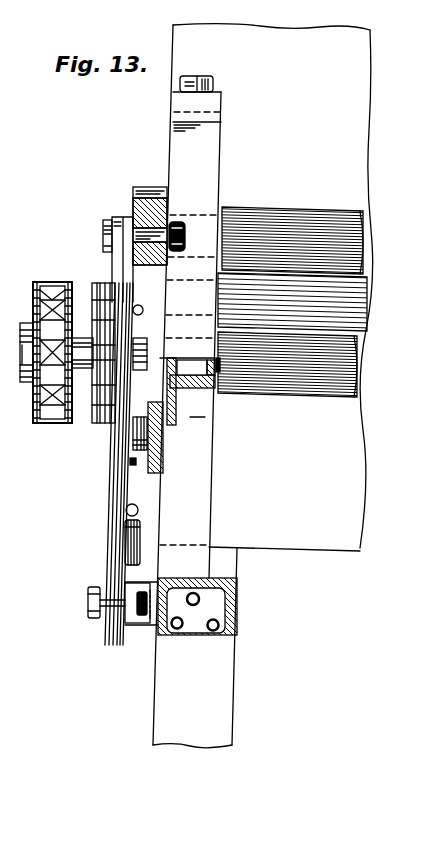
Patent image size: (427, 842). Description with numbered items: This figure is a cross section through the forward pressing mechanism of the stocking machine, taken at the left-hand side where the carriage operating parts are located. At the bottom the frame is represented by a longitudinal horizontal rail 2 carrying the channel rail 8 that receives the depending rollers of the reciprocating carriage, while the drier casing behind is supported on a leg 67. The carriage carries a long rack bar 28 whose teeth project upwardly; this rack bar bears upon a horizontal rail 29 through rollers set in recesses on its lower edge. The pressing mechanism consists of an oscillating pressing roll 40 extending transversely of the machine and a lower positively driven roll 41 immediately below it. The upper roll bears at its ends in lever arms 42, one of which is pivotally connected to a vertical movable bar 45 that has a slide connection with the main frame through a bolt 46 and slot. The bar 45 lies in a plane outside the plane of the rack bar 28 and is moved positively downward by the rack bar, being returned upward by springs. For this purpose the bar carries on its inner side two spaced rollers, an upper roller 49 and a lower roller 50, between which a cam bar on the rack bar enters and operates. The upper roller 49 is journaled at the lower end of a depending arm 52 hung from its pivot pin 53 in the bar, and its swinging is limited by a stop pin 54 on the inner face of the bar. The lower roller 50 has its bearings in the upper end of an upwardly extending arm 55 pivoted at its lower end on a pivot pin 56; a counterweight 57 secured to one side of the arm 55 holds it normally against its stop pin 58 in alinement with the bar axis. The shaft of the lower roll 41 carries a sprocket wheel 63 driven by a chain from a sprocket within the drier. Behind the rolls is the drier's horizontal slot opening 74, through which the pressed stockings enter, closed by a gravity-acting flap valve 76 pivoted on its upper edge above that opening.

The longitudinal horizontal rail 2 is at (205, 417).
The channel rail 8 is at (222, 362).
The rack bar 28 is at (168, 412).
The horizontal rail 29 is at (160, 460).
The oscillating pressing roll 40 is at (292, 240).
The lower positively driven roll 41 is at (287, 364).
The lever arm 42 is at (133, 193).
The vertical movable bar 45 is at (112, 258).
The bolt 46 is at (88, 600).
The upper roller 49 is at (214, 392).
The lower roller 50 is at (140, 434).
The depending arm 52 is at (133, 337).
The pivot pin 53 is at (143, 309).
The stop pin 54 is at (141, 356).
The upwardly extending arm 55 is at (130, 487).
The pivot pin 56 is at (138, 510).
The counterweight 57 is at (133, 544).
The stop pin 58 is at (130, 462).
The sprocket wheel 63 is at (110, 370).
The leg 67 is at (155, 683).
The horizontal slot opening 74 is at (373, 282).
The flap valve 76 is at (347, 308).